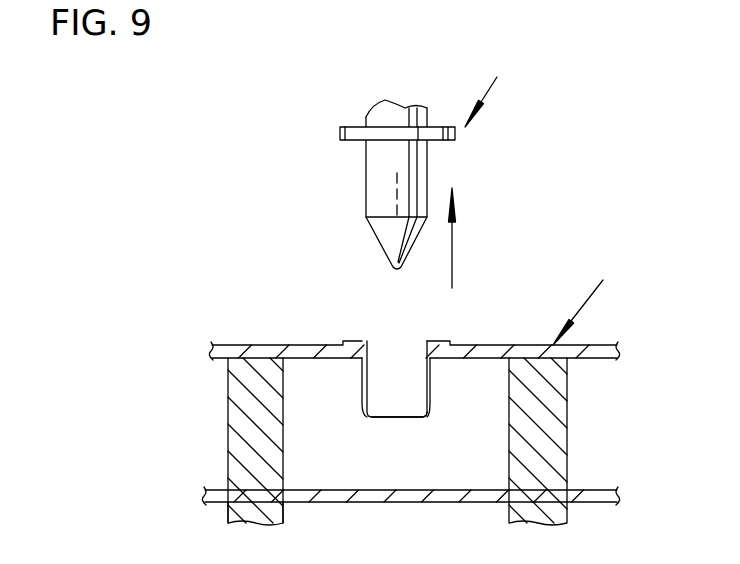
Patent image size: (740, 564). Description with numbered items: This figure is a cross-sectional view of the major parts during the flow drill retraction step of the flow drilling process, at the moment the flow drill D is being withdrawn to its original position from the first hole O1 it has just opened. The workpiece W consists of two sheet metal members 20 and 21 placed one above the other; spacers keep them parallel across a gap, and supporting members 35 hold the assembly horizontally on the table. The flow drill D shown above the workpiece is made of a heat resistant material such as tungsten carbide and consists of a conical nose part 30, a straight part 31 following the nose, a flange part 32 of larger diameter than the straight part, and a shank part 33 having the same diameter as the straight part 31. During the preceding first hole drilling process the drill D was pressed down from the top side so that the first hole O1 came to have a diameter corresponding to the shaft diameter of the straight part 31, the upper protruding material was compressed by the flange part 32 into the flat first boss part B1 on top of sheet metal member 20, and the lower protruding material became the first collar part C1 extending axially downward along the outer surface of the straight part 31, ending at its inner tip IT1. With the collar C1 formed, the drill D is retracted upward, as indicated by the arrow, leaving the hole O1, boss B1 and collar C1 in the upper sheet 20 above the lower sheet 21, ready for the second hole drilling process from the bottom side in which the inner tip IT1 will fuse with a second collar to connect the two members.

The sheet metal member 20 is at (254, 345).
The sheet metal member 21 is at (405, 499).
The conical nose part 30 is at (390, 242).
The straight part 31 is at (375, 180).
The flange part 32 is at (340, 132).
The shank part 33 is at (375, 113).
The supporting member 35 is at (267, 515).
The first boss part B1 is at (353, 341).
The first collar part C1 is at (433, 395).
The inner tip of the first collar part IT1 is at (427, 420).
The first hole O1 is at (402, 408).
The workpiece W is at (590, 307).
The flow drill D is at (518, 85).